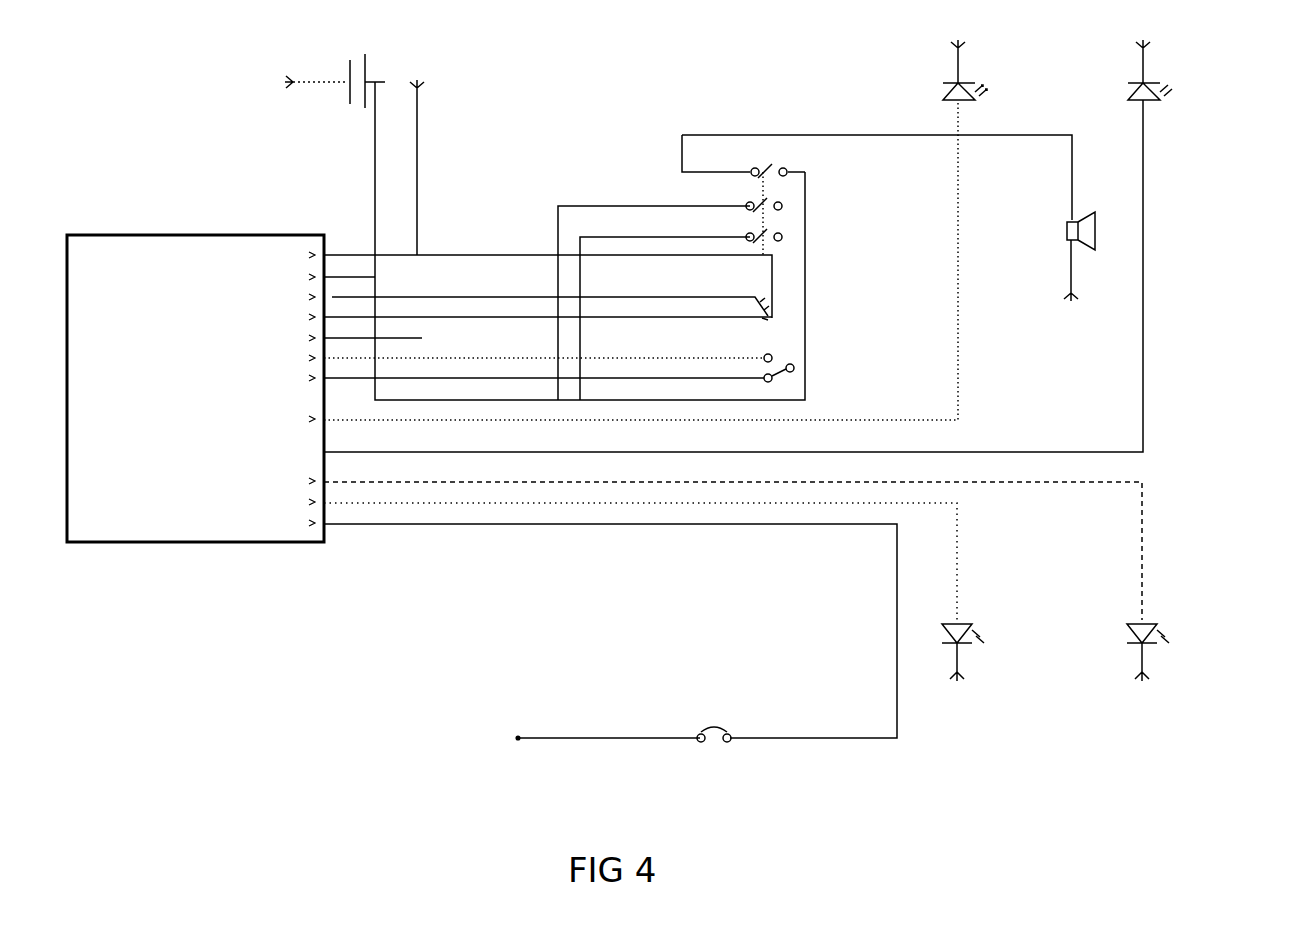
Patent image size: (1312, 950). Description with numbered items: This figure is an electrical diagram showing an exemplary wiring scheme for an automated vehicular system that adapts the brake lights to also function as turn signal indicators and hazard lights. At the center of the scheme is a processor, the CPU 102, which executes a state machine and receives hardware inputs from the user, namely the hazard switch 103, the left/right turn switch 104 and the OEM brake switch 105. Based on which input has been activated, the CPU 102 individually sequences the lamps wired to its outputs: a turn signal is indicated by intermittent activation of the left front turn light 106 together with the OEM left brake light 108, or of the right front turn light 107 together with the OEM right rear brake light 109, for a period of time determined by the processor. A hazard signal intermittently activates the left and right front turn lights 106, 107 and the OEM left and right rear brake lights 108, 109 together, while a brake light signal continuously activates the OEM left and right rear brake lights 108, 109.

The CPU 102 is at (213, 236).
The hazard switch 103 is at (772, 223).
The left/right turn switch 104 is at (780, 364).
The OEM brake switch 105 is at (713, 706).
The left front turn light 106 is at (987, 88).
The right front turn light 107 is at (1170, 88).
The OEM left brake light 108 is at (990, 635).
The OEM right rear brake light 109 is at (1175, 635).